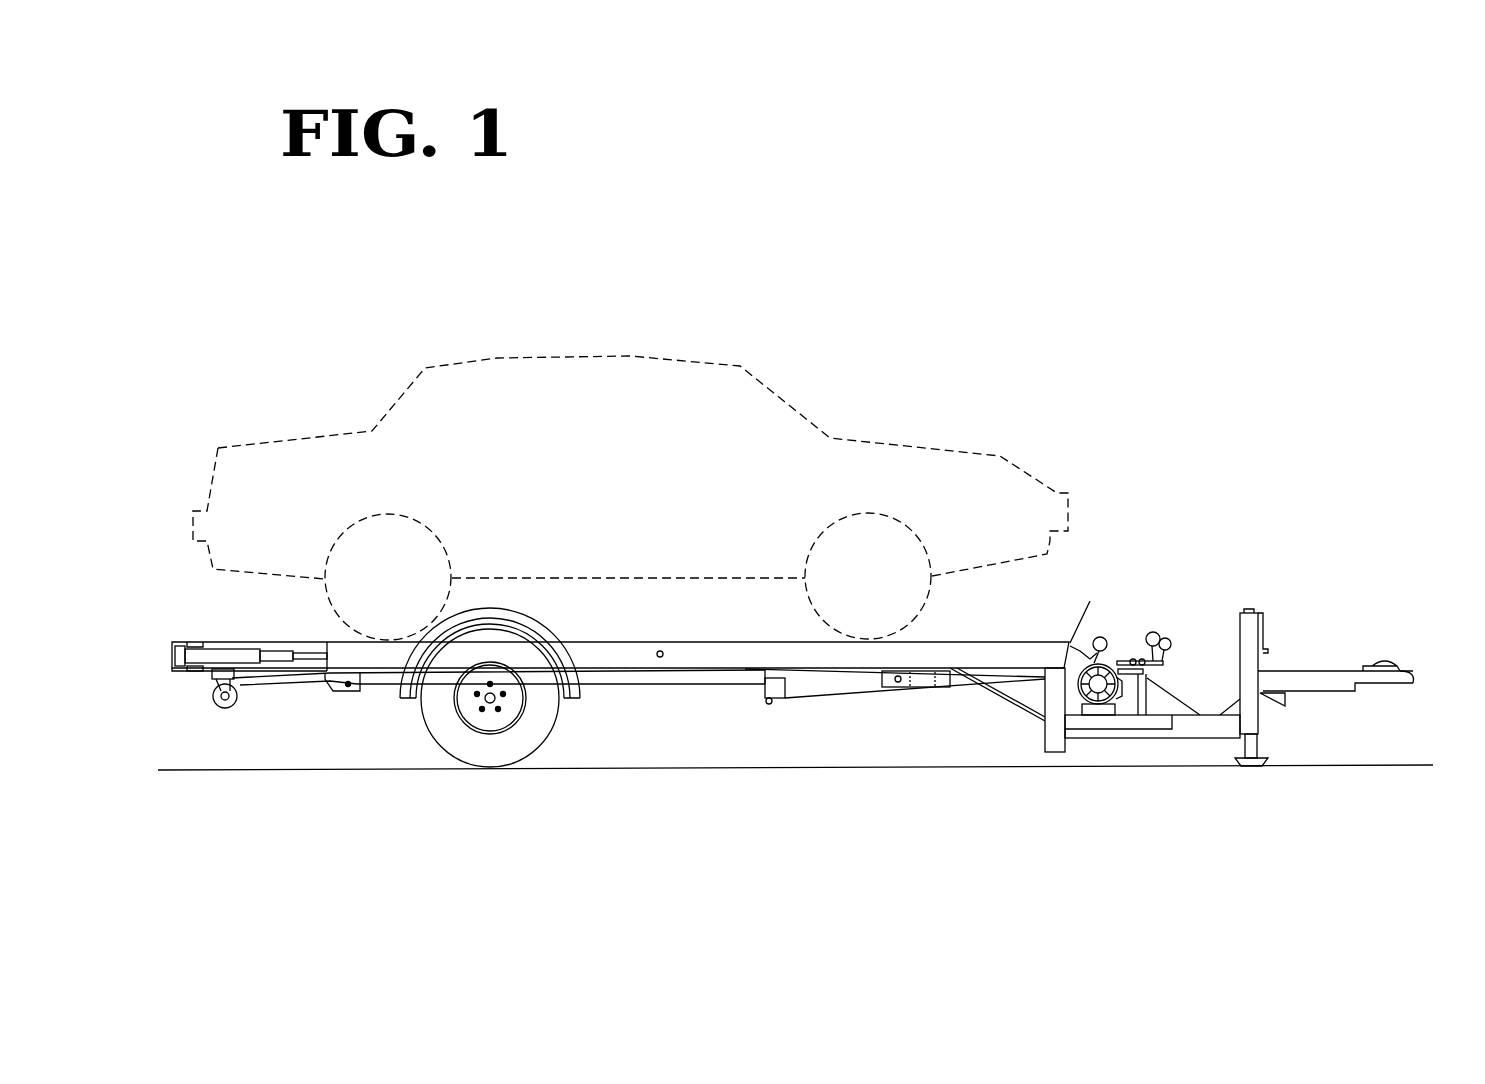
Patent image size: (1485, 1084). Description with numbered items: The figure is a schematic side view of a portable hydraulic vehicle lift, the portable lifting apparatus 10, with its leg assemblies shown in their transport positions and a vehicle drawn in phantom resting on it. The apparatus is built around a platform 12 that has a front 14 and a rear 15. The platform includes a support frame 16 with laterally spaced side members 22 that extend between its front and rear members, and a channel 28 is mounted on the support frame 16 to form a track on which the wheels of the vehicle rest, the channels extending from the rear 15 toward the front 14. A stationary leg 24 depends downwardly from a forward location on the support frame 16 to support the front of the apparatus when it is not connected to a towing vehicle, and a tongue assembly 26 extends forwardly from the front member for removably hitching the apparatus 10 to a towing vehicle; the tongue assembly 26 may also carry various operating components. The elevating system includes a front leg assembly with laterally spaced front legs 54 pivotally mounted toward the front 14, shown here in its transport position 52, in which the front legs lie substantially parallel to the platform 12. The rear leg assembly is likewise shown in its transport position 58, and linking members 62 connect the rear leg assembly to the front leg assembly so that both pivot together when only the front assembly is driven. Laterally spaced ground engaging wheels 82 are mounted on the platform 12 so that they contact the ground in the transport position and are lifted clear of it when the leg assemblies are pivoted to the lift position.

The portable lifting apparatus 10 is at (1197, 510).
The platform 12 is at (690, 653).
The front 14 is at (1020, 647).
The rear 15 is at (183, 642).
The support frame 16 is at (612, 680).
The side members 22 is at (663, 672).
The stationary leg 24 is at (1053, 740).
The tongue assembly 26 is at (1298, 618).
The channel 28 is at (580, 652).
The transport position 52 is at (870, 725).
The front legs 54 is at (793, 683).
The transport position 58 is at (305, 728).
The linking members 62 is at (382, 687).
The wheels 82 is at (508, 750).